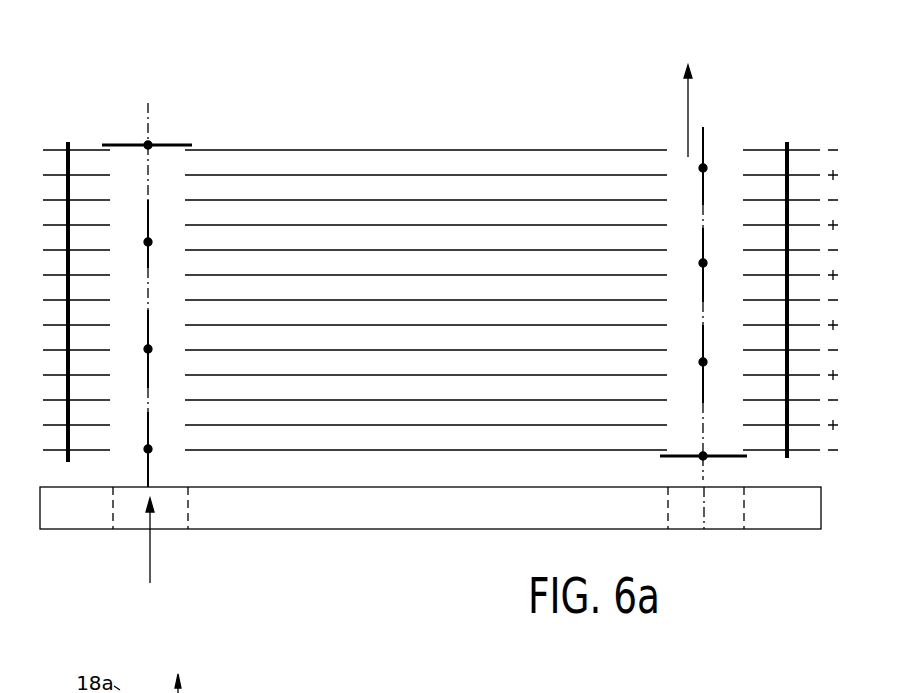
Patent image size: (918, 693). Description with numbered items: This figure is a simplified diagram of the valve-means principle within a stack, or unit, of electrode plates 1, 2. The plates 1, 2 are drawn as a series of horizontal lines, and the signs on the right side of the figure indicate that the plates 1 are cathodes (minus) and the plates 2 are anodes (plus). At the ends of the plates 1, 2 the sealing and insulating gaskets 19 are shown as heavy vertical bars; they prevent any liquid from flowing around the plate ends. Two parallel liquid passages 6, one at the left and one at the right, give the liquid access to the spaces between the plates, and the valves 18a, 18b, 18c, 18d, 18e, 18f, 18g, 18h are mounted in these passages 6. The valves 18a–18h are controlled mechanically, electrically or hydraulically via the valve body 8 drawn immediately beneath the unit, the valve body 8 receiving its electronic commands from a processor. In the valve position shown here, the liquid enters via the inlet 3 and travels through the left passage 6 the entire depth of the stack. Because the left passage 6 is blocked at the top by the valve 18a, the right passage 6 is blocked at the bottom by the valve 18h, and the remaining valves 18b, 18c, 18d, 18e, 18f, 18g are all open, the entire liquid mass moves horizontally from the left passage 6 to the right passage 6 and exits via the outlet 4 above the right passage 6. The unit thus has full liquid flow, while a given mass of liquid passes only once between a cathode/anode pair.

The electrode plate 1 is at (424, 286).
The electrode plate 2 is at (423, 288).
The inlet 3 is at (148, 548).
The outlet 4 is at (688, 113).
The liquid passage 6 is at (723, 157).
The valve body 8 is at (432, 530).
The valve 18a is at (167, 143).
The valve 18b is at (150, 222).
The valve 18c is at (150, 322).
The valve 18d is at (150, 422).
The valve 18e is at (703, 180).
The valve 18f is at (703, 263).
The valve 18g is at (703, 348).
The valve 18h is at (703, 452).
The sealing and insulating gasket 19 is at (70, 160).